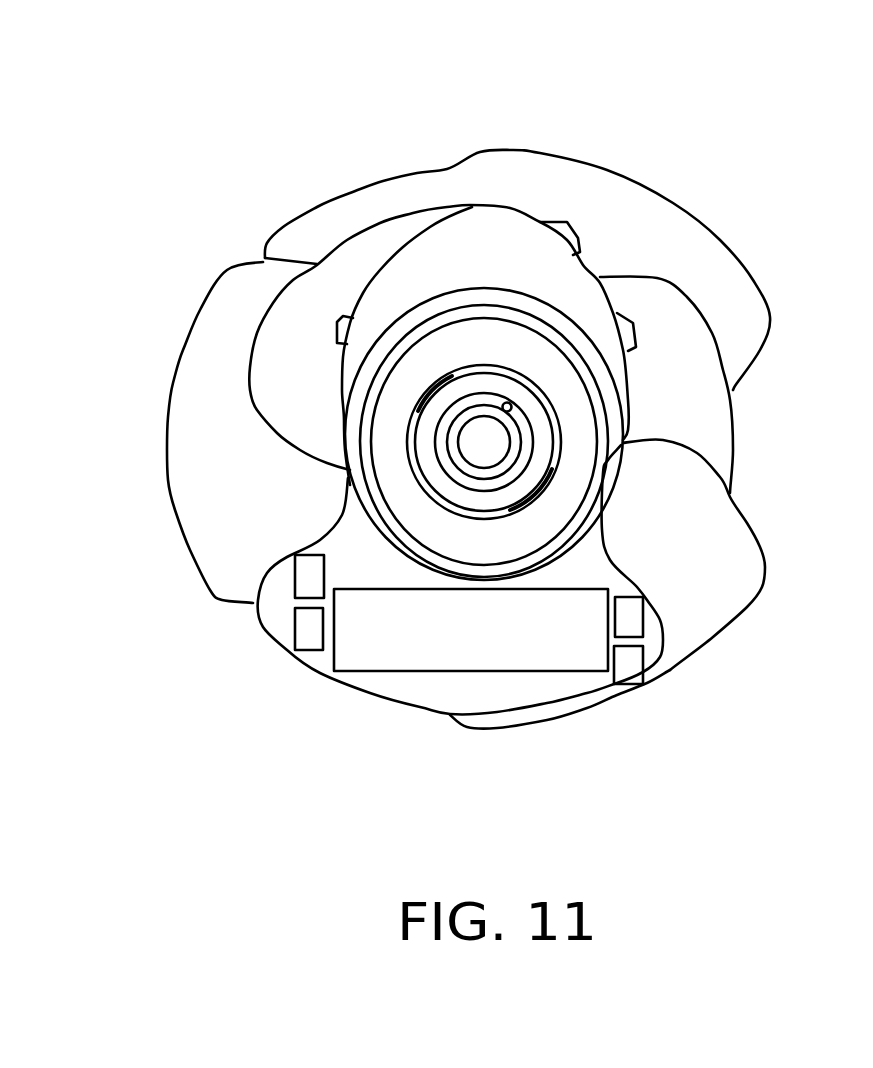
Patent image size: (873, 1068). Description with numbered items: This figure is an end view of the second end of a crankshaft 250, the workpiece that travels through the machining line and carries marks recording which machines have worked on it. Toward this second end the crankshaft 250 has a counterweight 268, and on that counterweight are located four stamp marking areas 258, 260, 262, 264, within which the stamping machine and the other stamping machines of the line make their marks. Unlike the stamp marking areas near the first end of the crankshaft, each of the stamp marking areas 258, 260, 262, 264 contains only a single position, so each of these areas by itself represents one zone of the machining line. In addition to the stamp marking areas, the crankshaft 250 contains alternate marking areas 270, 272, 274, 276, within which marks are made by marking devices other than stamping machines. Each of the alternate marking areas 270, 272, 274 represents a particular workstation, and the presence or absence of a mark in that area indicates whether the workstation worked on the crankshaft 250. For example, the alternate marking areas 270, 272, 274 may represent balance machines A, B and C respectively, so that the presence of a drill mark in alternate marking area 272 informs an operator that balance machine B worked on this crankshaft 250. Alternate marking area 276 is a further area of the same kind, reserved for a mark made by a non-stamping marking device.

The crankshaft 250 is at (704, 175).
The stamp marking area 258 is at (305, 579).
The stamp marking area 260 is at (310, 641).
The stamp marking area 262 is at (627, 673).
The stamp marking area 264 is at (637, 620).
The counterweight 268 is at (592, 570).
The alternate marking area 270 is at (449, 735).
The alternate marking area 272 is at (350, 192).
The alternate marking area 274 is at (170, 383).
The alternate marking area 276 is at (631, 324).